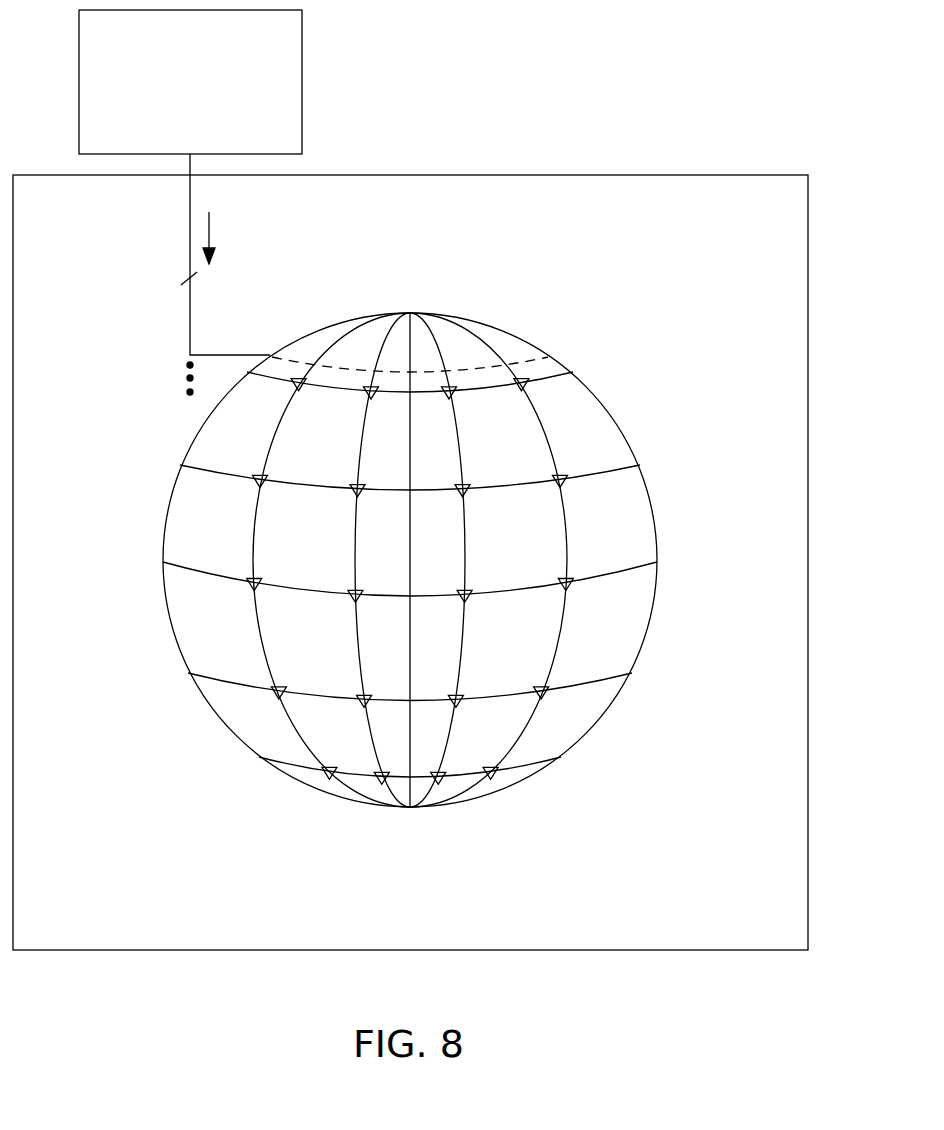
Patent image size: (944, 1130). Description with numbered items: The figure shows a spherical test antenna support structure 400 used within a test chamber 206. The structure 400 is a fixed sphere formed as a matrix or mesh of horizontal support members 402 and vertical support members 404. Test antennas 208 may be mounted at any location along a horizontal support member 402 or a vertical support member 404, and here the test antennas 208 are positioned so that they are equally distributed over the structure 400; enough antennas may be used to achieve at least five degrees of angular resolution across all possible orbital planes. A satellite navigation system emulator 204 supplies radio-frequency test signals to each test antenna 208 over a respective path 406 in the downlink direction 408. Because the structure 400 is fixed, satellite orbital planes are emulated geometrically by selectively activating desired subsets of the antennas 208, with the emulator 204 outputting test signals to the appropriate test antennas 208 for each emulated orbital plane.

The satellite navigation system emulator 204 is at (302, 71).
The test chamber 206 is at (713, 172).
The test antennas 208 is at (450, 393).
The spherical test antenna support structure 400 is at (553, 336).
The horizontal support members 402 is at (555, 378).
The vertical support members 404 is at (352, 525).
The path 406 is at (190, 310).
The downlink direction 408 is at (209, 234).